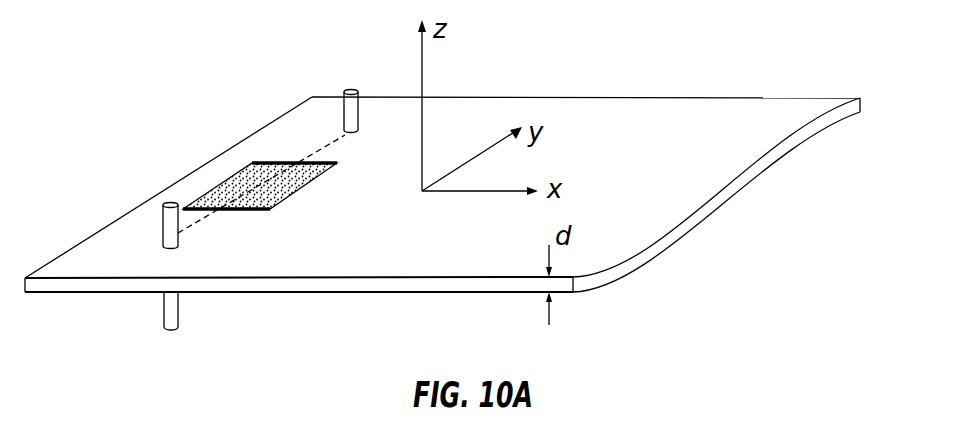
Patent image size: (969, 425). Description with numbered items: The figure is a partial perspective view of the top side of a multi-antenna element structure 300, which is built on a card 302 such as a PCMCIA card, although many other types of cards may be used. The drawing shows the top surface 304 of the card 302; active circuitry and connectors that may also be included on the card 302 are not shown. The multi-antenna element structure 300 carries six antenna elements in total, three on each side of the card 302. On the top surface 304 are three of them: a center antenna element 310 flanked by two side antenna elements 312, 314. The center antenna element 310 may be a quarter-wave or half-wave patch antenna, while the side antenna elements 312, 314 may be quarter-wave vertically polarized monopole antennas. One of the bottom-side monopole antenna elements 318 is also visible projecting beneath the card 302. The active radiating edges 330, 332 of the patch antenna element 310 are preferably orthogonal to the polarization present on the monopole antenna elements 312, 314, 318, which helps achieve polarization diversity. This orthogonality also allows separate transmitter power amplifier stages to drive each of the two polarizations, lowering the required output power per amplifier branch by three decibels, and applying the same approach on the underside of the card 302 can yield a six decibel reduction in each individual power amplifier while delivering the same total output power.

The multi-antenna element structure 300 is at (631, 38).
The card 302 is at (488, 90).
The top surface 304 is at (690, 107).
The antenna element 310 is at (230, 182).
The antenna element 312 is at (342, 112).
The antenna element 314 is at (162, 227).
The antenna element 318 is at (163, 311).
The active edge 330 is at (248, 211).
The active edge 332 is at (331, 165).